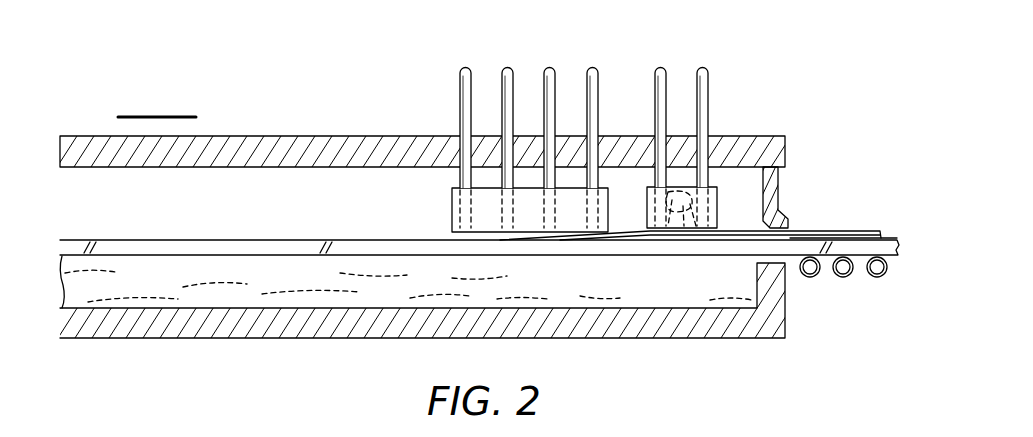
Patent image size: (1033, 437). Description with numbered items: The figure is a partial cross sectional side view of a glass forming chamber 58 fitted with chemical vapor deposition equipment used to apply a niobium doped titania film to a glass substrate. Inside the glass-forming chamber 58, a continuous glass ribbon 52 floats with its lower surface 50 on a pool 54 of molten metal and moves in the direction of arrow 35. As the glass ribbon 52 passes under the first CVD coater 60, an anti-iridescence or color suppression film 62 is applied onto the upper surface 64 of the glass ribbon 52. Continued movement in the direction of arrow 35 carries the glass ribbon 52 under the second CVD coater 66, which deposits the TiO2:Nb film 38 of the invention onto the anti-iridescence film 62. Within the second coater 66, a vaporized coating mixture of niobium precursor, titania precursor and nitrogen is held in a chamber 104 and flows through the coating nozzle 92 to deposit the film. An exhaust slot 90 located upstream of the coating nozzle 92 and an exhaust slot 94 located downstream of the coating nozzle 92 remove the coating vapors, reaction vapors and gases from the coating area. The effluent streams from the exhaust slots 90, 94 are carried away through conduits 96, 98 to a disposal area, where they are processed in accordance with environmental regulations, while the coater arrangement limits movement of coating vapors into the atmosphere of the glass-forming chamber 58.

The arrow 35 is at (153, 116).
The TiO2:Nb film 38 is at (826, 229).
The surface of glass ribbon 50 is at (170, 257).
The continuous glass ribbon 52 is at (269, 257).
The pool of molten metal 54 is at (372, 285).
The glass-forming chamber 58 is at (305, 88).
The first CVD coater 60 is at (438, 211).
The anti-iridescence film 62 is at (578, 240).
The surface of glass ribbon 64 is at (139, 239).
The second CVD coater 66 is at (734, 197).
The upstream exhaust slot 90 is at (666, 230).
The coating nozzle 92 is at (683, 230).
The downstream exhaust slot 94 is at (697, 235).
The conduit 96 is at (655, 89).
The conduit 98 is at (708, 88).
The chamber of coater 104 is at (668, 186).